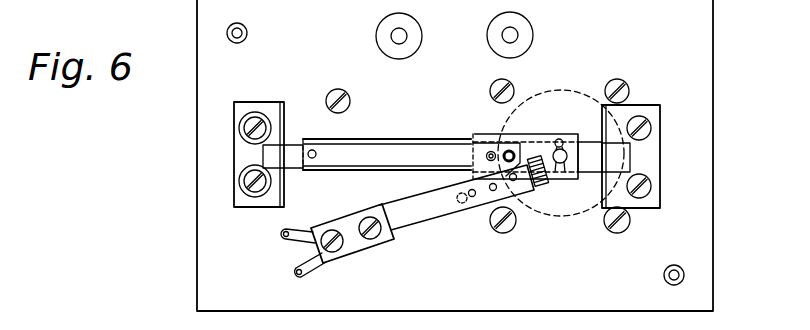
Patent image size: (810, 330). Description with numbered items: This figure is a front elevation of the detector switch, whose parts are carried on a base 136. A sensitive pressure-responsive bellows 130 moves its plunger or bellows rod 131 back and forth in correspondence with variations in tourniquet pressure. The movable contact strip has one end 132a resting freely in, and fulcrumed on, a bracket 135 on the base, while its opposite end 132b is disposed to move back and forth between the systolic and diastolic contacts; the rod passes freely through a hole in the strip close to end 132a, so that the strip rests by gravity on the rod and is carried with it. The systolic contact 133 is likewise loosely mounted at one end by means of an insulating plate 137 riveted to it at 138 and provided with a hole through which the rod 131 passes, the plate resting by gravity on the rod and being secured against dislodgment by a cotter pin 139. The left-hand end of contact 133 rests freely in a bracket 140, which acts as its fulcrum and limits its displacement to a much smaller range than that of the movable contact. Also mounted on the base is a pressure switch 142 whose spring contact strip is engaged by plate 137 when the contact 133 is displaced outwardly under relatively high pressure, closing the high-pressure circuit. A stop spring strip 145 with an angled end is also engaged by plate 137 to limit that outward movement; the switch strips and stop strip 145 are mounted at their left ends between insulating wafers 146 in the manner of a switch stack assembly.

The bellows 130 is at (556, 89).
The bellows rod 131 is at (549, 186).
The end of movable contact 132a is at (630, 162).
The opposite end of movable contact 132b is at (305, 138).
The systolic contact 133 is at (312, 159).
The bracket 135 is at (647, 108).
The base 136 is at (701, 51).
The insulating plate 137 is at (530, 148).
The rivets 138 is at (507, 151).
The cotter pin 139 is at (589, 113).
The bracket 140 is at (281, 103).
The pressure switch 142 is at (377, 251).
The stop spring strip 145 is at (421, 212).
The insulating wafers 146 is at (314, 244).